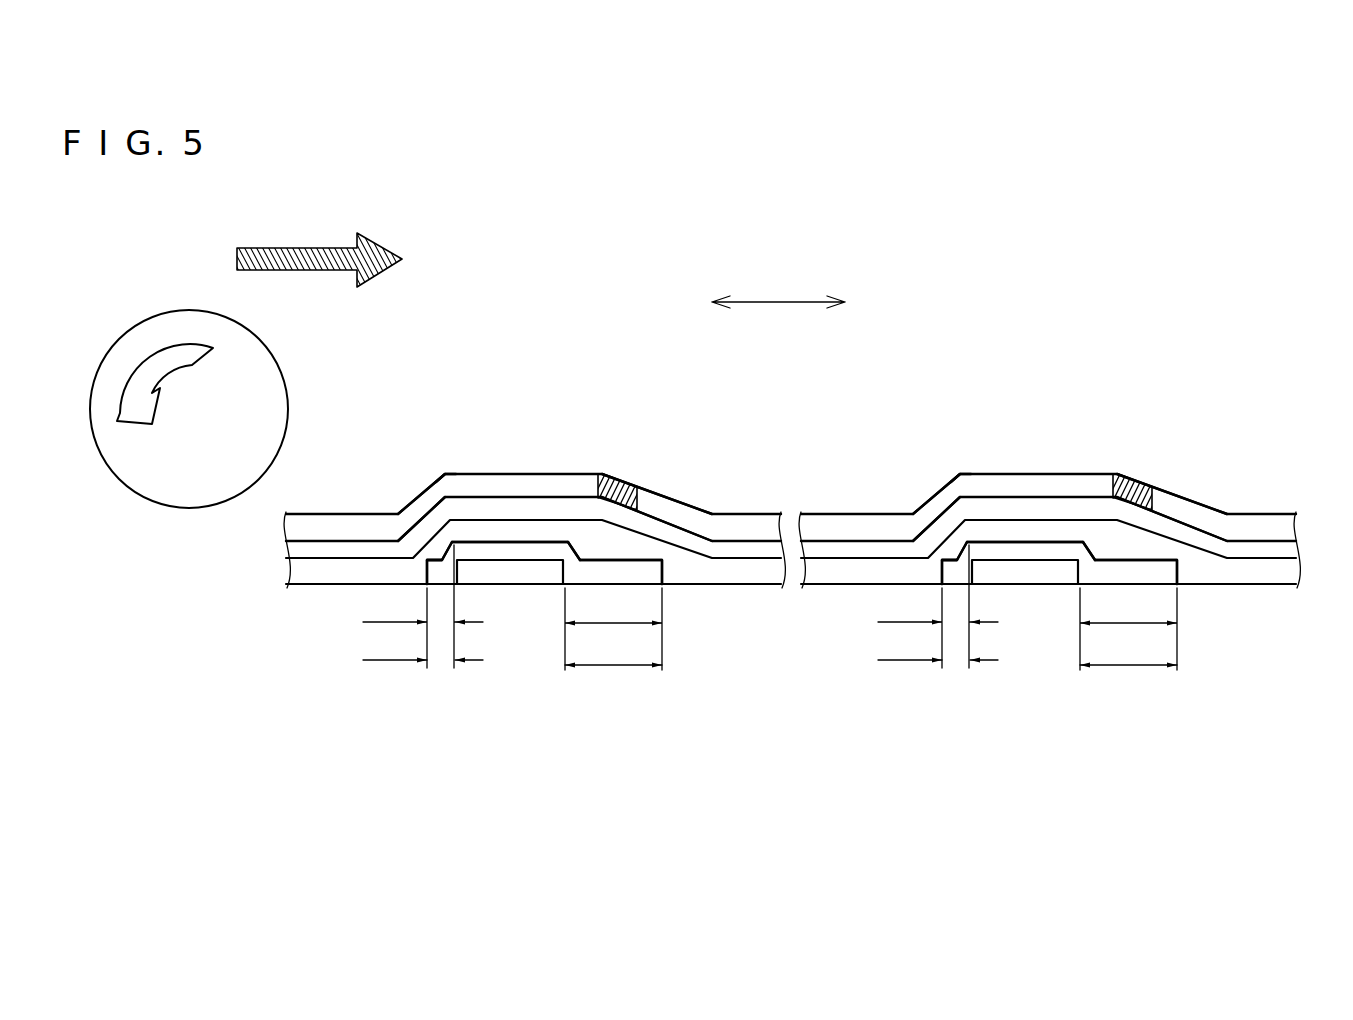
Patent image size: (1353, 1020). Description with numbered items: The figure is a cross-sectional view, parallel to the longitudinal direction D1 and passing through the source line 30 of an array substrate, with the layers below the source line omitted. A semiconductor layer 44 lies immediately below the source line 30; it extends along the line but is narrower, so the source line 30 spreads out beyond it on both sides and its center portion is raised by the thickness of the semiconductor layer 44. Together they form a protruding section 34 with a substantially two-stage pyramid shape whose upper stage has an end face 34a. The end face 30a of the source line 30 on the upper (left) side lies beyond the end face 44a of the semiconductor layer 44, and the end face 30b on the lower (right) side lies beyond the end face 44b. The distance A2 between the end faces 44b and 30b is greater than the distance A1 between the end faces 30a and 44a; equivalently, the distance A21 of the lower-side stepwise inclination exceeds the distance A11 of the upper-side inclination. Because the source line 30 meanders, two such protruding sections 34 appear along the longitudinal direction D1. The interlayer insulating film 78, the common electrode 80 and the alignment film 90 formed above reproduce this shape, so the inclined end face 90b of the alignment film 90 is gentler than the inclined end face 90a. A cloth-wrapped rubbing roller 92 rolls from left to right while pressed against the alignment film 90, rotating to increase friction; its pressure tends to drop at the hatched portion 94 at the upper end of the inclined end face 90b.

The interlayer insulating film 78 is at (738, 588).
The common electrode 80 is at (768, 547).
The alignment film 90 is at (766, 533).
The inclined end face 90a is at (424, 487).
The inclined end face 90b is at (673, 497).
The rubbing roller 92 is at (197, 320).
The portion 94 is at (615, 474).
The source line 30 is at (493, 556).
The end face 30a is at (427, 572).
The end face 30b is at (663, 573).
The protruding section 34 is at (529, 531).
The end face 34a is at (447, 476).
The semiconductor layer 44 is at (526, 590).
The end face 44a is at (427, 566).
The end face 44b is at (578, 556).
The distance A1 is at (680, 643).
The distance A11 is at (680, 606).
The distance A2 is at (871, 647).
The distance A21 is at (871, 628).
The longitudinal direction D1 is at (778, 282).